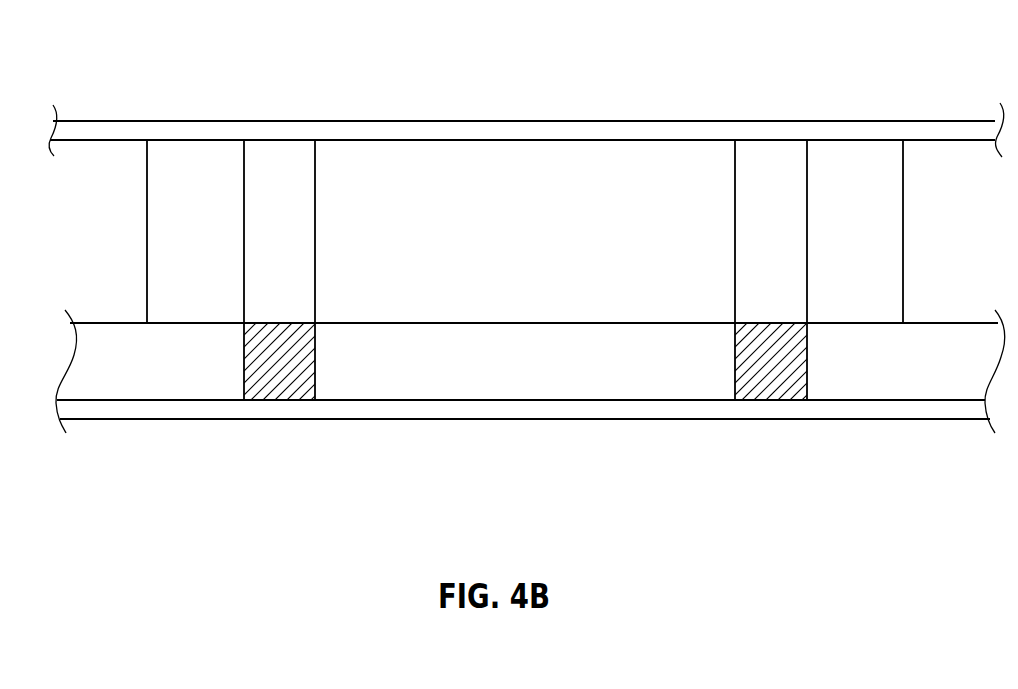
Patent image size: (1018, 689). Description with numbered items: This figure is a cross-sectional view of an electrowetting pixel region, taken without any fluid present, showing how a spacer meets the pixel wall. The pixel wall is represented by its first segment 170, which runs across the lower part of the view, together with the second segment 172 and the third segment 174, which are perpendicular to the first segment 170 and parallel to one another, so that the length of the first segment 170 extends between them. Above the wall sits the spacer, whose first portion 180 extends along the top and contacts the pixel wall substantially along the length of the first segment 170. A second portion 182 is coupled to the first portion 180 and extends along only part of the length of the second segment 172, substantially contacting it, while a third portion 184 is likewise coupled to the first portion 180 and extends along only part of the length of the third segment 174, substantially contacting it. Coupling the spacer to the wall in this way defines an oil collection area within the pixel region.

The first segment 170 is at (482, 392).
The second segment 172 is at (778, 385).
The third segment 174 is at (288, 385).
The first portion 180 is at (608, 175).
The second portion 182 is at (783, 170).
The third portion 184 is at (277, 175).